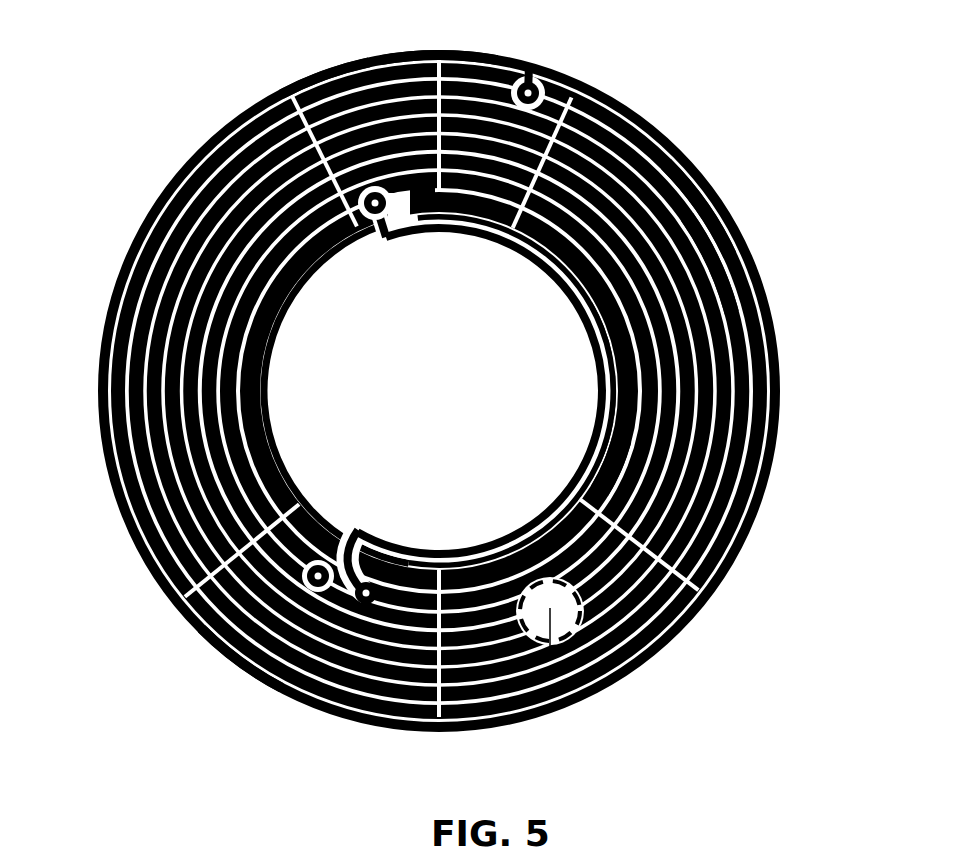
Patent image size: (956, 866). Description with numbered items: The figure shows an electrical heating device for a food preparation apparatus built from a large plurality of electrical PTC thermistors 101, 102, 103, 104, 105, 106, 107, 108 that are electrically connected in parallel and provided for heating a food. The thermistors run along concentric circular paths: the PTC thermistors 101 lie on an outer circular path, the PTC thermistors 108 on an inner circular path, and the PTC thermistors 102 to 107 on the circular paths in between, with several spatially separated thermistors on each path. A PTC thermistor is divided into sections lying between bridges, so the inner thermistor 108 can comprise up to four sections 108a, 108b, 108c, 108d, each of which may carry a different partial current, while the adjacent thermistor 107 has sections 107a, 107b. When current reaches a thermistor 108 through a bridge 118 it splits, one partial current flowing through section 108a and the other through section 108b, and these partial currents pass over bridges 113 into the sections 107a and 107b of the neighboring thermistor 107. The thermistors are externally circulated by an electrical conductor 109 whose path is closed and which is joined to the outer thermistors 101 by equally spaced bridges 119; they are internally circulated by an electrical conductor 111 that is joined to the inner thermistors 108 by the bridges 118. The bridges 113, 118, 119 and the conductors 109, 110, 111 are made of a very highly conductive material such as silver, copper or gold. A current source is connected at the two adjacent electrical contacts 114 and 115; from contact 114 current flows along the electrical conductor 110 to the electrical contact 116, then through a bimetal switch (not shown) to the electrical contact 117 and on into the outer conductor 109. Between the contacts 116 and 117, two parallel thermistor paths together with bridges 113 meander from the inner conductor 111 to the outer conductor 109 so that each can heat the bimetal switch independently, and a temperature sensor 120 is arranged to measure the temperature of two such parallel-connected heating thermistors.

The electrical PTC thermistor 101 is at (203, 125).
The electrical PTC thermistor 102 is at (183, 150).
The electrical PTC thermistor 103 is at (130, 223).
The electrical PTC thermistor 104 is at (115, 255).
The electrical PTC thermistor 105 is at (92, 375).
The electrical PTC thermistor 106 is at (93, 430).
The electrical PTC thermistor 107 is at (610, 377).
The PTC thermistor section 107a is at (720, 200).
The PTC thermistor section 107b is at (745, 265).
The electrical PTC thermistor 108 is at (413, 203).
The PTC thermistor section 108a is at (515, 240).
The PTC thermistor section 108b is at (590, 330).
The PTC thermistor section 108c is at (605, 400).
The PTC thermistor section 108d is at (596, 426).
The electrical conductor 109 is at (303, 70).
The electrical conductor 110 is at (290, 330).
The electrical conductor 111 is at (587, 440).
The bridge 113 is at (565, 100).
The electrical contact 114 is at (362, 572).
The electrical contact 115 is at (215, 693).
The electrical contact 116 is at (380, 207).
The electrical contact 117 is at (513, 62).
The bridge 118 is at (298, 265).
The bridge 119 is at (422, 50).
The temperature sensor 120 is at (542, 650).